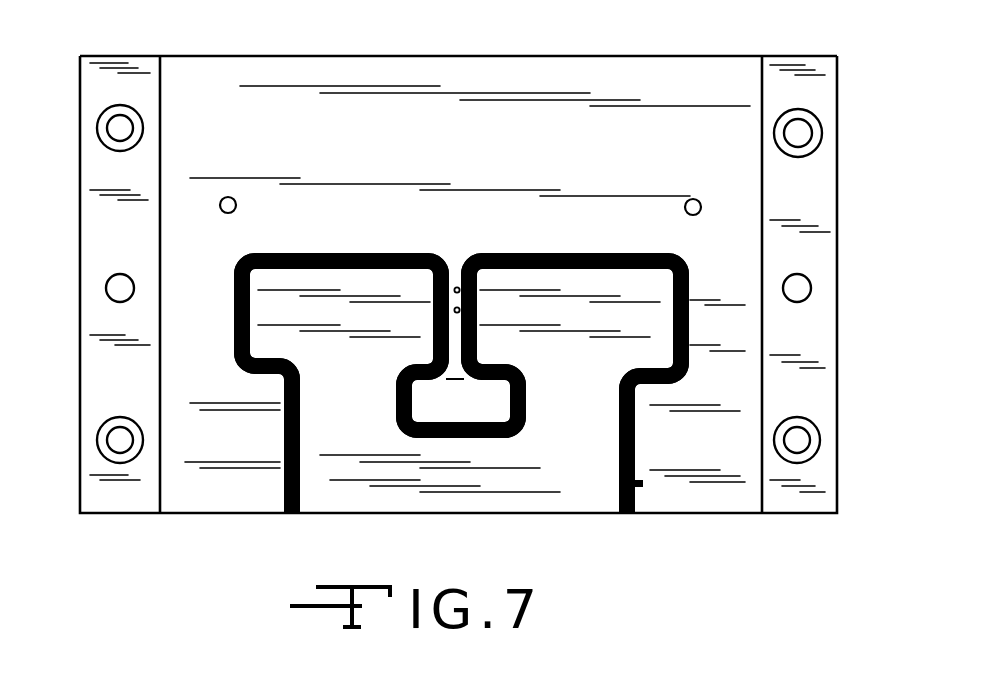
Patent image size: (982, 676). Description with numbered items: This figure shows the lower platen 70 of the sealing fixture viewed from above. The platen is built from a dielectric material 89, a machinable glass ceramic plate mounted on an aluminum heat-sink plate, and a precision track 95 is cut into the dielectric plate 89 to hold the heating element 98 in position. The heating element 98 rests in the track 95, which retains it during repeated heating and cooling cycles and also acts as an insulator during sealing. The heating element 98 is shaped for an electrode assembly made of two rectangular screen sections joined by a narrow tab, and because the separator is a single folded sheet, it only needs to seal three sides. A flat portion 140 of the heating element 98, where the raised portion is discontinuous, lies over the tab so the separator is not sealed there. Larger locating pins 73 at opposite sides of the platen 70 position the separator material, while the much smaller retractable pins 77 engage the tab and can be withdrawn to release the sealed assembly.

The lower platen 70 is at (275, 44).
The dielectric material 89 is at (553, 82).
The locating pins 73 is at (231, 196).
The flat portion 140 is at (447, 298).
The retractable pins 77 is at (457, 287).
The heating element 98 is at (684, 338).
The precision track 95 is at (642, 484).